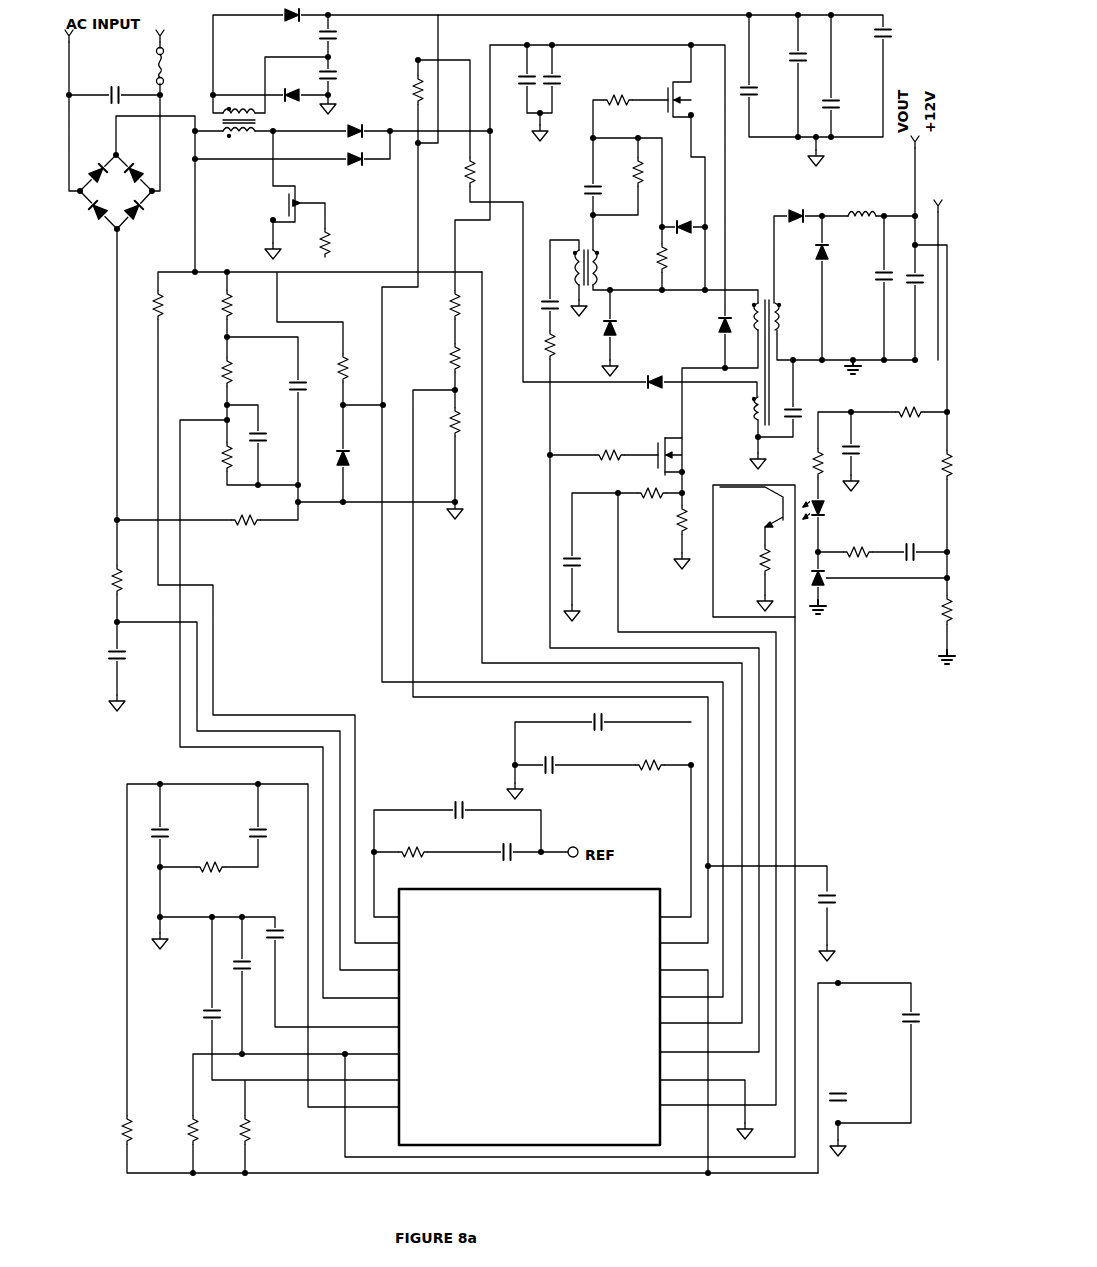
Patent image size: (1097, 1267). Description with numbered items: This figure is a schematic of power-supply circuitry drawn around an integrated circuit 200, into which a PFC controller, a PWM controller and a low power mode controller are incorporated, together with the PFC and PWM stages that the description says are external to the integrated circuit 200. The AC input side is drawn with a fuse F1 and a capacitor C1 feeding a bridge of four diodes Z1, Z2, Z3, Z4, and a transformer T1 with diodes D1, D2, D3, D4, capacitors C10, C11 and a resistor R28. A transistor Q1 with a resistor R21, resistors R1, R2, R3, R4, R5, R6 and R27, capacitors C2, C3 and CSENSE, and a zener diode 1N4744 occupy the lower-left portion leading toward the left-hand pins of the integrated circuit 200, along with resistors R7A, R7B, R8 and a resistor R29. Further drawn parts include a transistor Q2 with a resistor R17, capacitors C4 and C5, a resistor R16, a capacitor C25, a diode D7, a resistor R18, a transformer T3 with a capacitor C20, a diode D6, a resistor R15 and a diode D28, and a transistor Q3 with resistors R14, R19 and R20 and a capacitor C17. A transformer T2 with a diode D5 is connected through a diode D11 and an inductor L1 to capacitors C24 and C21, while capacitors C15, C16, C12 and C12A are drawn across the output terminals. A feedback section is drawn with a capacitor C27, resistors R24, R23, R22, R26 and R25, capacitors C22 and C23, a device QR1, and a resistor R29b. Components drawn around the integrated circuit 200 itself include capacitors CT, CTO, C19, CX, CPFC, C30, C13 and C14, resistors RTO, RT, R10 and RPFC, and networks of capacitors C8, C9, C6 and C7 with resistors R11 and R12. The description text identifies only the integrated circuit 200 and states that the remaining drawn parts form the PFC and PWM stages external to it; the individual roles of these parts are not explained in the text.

The integrated circuit 200 is at (449, 893).
The capacitor C1 is at (110, 80).
The fuse F1 is at (176, 66).
The bridge rectifier diode Z1 is at (134, 162).
The bridge rectifier diode Z2 is at (134, 219).
The bridge rectifier diode Z3 is at (95, 162).
The bridge rectifier diode Z4 is at (95, 219).
The transformer T1 is at (239, 130).
The transformer T2 is at (763, 347).
The transformer T3 is at (597, 267).
The inductor L1 is at (862, 205).
The diode D1 is at (356, 119).
The diode D2 is at (355, 170).
The diode D3 is at (288, 84).
The diode D4 is at (288, 26).
The diode D5 is at (713, 336).
The diode D6 is at (626, 330).
The diode D7 is at (682, 220).
The diode D11 is at (805, 234).
The diode D28 is at (646, 378).
The zener diode 1N4744 is at (335, 469).
The shunt regulator QR1 is at (837, 588).
The MOSFET transistor Q1 is at (299, 187).
The MOSFET transistor Q2 is at (670, 81).
The MOSFET transistor Q3 is at (661, 445).
The resistor R1 is at (169, 305).
The resistor R2 is at (238, 305).
The resistor R3 is at (214, 372).
The resistor R4 is at (214, 457).
The resistor R5 is at (234, 542).
The resistor R6 is at (104, 580).
The resistor R7A is at (433, 305).
The resistor R7B is at (433, 358).
The resistor R8 is at (440, 422).
The resistor R10 is at (172, 1130).
The resistor R11 is at (648, 756).
The resistor R12 is at (410, 846).
The resistor R14 is at (609, 448).
The resistor R15 is at (564, 353).
The resistor R16 is at (630, 175).
The resistor R17 is at (616, 92).
The resistor R18 is at (673, 261).
The resistor R19 is at (640, 485).
The resistor R20 is at (663, 524).
The resistor R21 is at (342, 243).
The resistor R22 is at (928, 468).
The resistor R23 is at (799, 463).
The resistor R24 is at (907, 403).
The resistor R25 is at (928, 611).
The resistor R26 is at (857, 545).
The resistor R27 is at (326, 362).
The resistor R28 is at (399, 90).
The resistor R29 is at (450, 172).
The resistor (optocoupler emitter) R29b is at (745, 560).
The timing resistor RT is at (114, 1130).
The resistor RTO is at (208, 860).
The PFC ramp resistor RPFC is at (268, 1131).
The capacitor C2 is at (266, 448).
The capacitor C3 is at (285, 375).
The capacitor C4 is at (516, 90).
The capacitor C5 is at (561, 73).
The capacitor C6 is at (506, 841).
The capacitor C7 is at (455, 825).
The capacitor C8 is at (544, 757).
The capacitor C9 is at (593, 734).
The capacitor C10 is at (343, 69).
The capacitor C11 is at (343, 28).
The capacitor C12 is at (844, 97).
The capacitor C12A is at (901, 25).
The capacitor C13 is at (892, 1029).
The capacitor C14 is at (852, 1089).
The capacitor C15 is at (781, 50).
The capacitor C16 is at (761, 101).
The capacitor C17 is at (585, 552).
The capacitor C19 is at (272, 916).
The capacitor C20 is at (562, 318).
The capacitor C21 is at (907, 303).
The capacitor C22 is at (862, 445).
The capacitor C23 is at (907, 546).
The capacitor C24 is at (869, 288).
The capacitor C25 is at (577, 203).
The capacitor C27 is at (805, 402).
The capacitor C30 is at (841, 889).
The timing capacitor CT is at (168, 824).
The capacitor CTO is at (236, 824).
The capacitor CX is at (250, 975).
The PFC ramp capacitor CPFC is at (181, 1017).
The current sense capacitor CSENSE is at (108, 669).